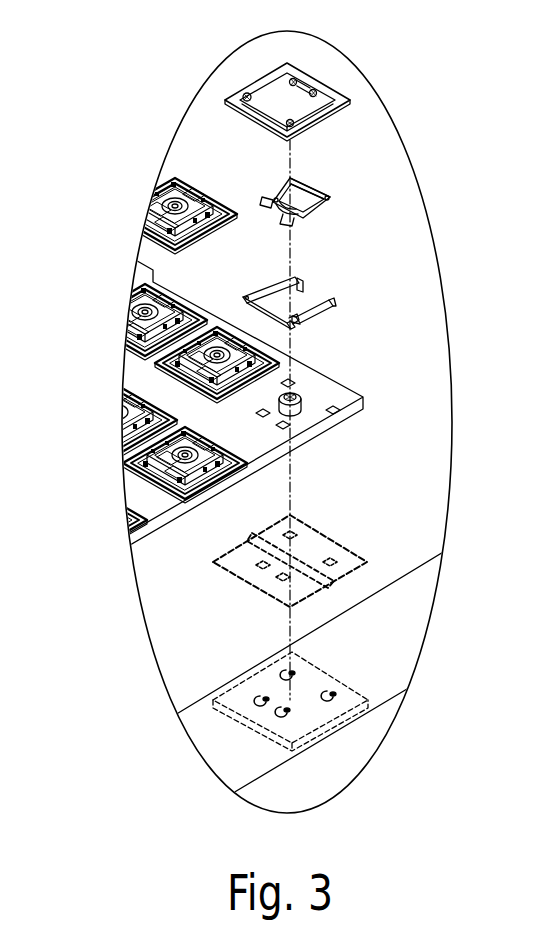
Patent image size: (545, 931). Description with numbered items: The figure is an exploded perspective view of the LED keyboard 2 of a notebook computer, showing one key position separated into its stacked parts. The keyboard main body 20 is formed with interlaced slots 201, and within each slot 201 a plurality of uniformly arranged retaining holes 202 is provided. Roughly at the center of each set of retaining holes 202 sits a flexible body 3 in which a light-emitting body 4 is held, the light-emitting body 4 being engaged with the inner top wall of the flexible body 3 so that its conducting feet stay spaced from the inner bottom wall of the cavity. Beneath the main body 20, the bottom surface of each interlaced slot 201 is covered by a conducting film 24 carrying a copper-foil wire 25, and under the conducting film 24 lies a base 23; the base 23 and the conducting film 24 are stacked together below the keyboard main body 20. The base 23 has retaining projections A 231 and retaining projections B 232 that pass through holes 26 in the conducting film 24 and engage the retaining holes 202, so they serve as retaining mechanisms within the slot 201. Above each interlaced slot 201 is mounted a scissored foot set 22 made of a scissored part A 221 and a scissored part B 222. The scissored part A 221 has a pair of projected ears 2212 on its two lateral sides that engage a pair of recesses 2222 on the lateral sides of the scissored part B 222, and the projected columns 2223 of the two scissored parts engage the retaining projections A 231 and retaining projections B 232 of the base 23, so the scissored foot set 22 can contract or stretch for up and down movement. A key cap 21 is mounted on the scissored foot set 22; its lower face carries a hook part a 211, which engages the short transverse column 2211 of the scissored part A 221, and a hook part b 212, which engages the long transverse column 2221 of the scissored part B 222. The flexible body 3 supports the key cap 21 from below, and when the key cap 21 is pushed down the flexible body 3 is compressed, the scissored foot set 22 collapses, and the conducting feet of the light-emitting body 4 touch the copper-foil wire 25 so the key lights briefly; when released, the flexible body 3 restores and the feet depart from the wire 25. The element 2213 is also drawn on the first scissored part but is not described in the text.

The LED keyboard 2 is at (282, 765).
The keyboard main body 20 is at (348, 403).
The interlaced slots 201 is at (250, 440).
The retaining holes 202 is at (343, 410).
The flexible body 3 is at (303, 397).
The light-emitting body 4 is at (297, 392).
The key cap 21 is at (233, 108).
The hook part a 211 is at (307, 82).
The hook part b 212 is at (247, 97).
The scissored foot set 22 is at (402, 268).
The scissored part A 221 is at (323, 200).
The short transverse column 2211 is at (293, 188).
The projected ears 2212 is at (273, 190).
The clip tab 2213 is at (257, 207).
The scissored part B 222 is at (295, 277).
The long transverse column 2221 is at (120, 335).
The recesses 2222 is at (275, 292).
The projected columns 2223 is at (332, 308).
The base 23 is at (350, 703).
The retaining projections A 231 is at (253, 697).
The retaining projections B 232 is at (330, 688).
The conducting film 24 is at (263, 580).
The copper-foil wire 25 is at (247, 542).
The holes 26 is at (333, 558).